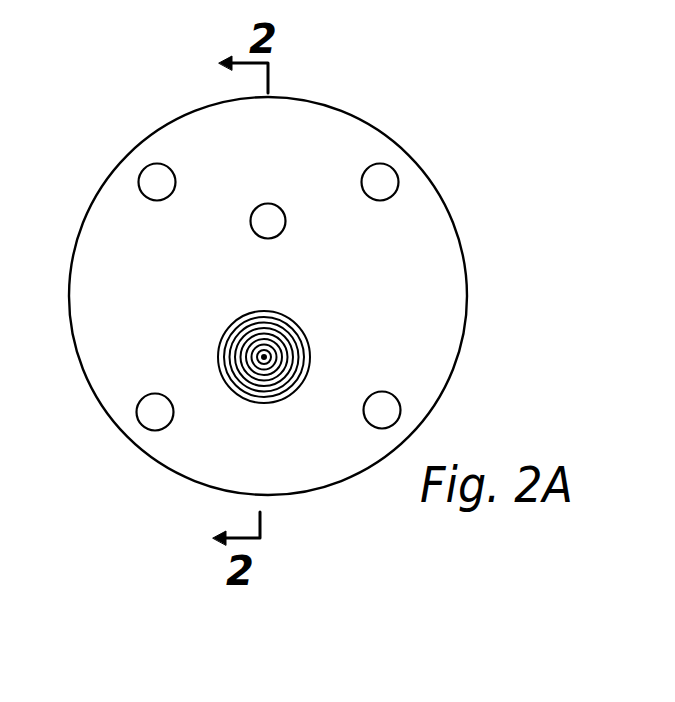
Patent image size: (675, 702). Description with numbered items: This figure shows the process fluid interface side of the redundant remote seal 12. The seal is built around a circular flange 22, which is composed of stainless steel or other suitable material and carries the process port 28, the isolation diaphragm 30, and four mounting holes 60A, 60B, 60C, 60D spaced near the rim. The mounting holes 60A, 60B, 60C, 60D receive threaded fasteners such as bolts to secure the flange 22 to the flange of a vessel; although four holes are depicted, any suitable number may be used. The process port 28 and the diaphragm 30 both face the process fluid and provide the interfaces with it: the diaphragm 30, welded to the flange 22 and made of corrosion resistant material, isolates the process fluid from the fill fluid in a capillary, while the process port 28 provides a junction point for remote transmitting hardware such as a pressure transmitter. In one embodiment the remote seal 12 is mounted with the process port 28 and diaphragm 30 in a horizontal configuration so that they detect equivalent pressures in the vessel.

The redundant remote seal 12 is at (413, 101).
The flange 22 is at (433, 258).
The process port 28 is at (251, 220).
The isolation diaphragm 30 is at (242, 357).
The mounting hole 60A is at (157, 178).
The mounting hole 60B is at (158, 412).
The mounting hole 60C is at (388, 407).
The mounting hole 60D is at (383, 177).